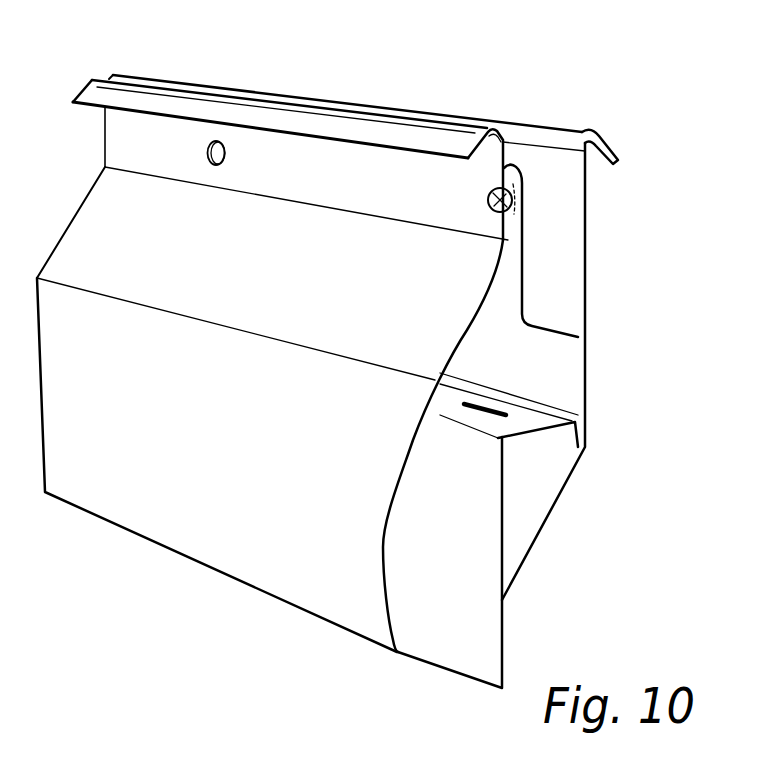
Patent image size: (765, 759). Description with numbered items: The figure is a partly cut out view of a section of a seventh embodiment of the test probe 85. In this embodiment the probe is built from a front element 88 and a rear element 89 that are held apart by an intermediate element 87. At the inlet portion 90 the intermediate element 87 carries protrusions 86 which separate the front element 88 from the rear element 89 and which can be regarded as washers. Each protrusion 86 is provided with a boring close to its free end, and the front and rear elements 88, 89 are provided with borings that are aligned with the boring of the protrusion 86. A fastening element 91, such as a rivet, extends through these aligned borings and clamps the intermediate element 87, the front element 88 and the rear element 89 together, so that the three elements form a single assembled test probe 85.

The test probe 85 is at (457, 90).
The protrusion 86 is at (507, 275).
The intermediate element 87 is at (500, 340).
The front element 88 is at (317, 448).
The rear element 89 is at (520, 150).
The inlet portion 90 is at (508, 122).
The fastening element 91 is at (488, 202).